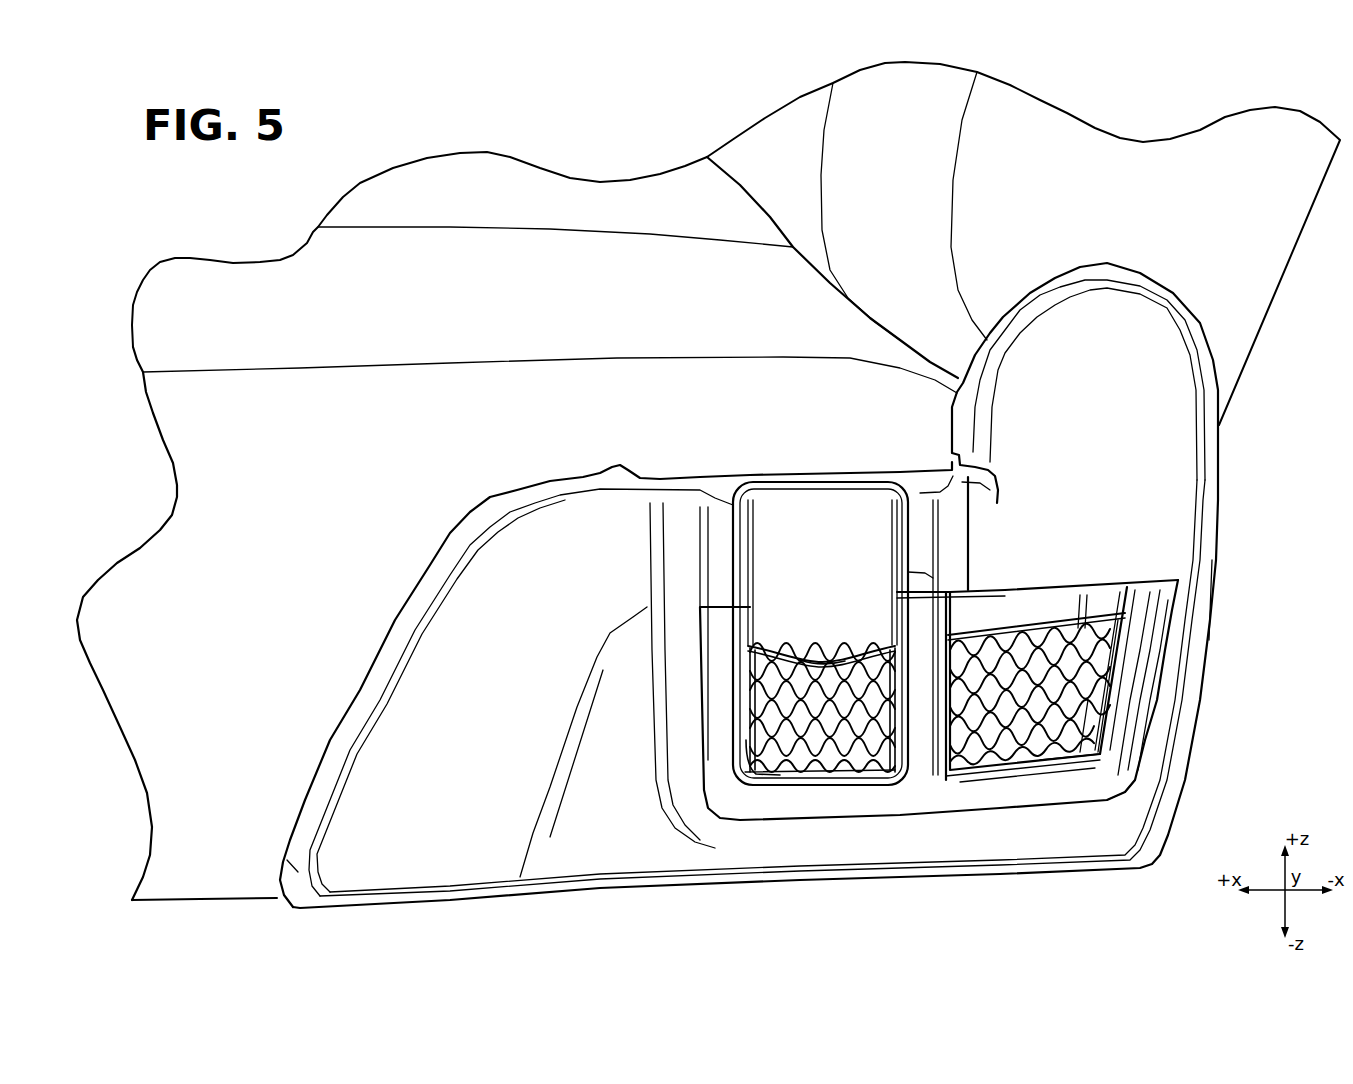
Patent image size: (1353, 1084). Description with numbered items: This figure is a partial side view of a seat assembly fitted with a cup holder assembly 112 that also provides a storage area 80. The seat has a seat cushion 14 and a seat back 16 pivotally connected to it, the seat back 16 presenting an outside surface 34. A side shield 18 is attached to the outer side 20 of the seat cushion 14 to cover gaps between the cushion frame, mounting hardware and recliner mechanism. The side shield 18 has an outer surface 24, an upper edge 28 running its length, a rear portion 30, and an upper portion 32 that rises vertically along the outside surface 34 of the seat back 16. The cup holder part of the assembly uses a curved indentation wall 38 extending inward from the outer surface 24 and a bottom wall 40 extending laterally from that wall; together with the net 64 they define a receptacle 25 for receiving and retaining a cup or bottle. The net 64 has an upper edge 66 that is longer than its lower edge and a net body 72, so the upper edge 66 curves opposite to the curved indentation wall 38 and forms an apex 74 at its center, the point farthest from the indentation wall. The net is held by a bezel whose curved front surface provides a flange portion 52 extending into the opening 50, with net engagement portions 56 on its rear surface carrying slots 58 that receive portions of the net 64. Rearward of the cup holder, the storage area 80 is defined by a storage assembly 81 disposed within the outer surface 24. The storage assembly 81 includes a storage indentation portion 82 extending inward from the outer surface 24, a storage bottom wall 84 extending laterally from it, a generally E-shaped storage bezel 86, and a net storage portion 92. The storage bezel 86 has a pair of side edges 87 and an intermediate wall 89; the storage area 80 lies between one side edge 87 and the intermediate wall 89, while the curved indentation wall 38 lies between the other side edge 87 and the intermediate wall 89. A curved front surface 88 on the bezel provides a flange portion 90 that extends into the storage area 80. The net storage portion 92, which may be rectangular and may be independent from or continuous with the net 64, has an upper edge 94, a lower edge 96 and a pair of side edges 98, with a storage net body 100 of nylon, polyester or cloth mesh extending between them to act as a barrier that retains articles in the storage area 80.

The seat cushion 14 is at (160, 345).
The seat back 16 is at (1280, 128).
The side shield 18 is at (443, 878).
The outer side 20 is at (217, 631).
The outer surface 24 is at (460, 810).
The receptacle 25 is at (836, 550).
The upper edge 28 is at (600, 496).
The rear portion 30 is at (1143, 804).
The upper portion 32 is at (1160, 362).
The outside surface 34 is at (1190, 223).
The curved indentation wall 38 is at (837, 498).
The bottom wall 40 is at (800, 768).
The opening 50 is at (893, 570).
The flange portion 52 is at (752, 648).
The net engagement portions 56 is at (740, 665).
The slots 58 is at (748, 690).
The net 64 is at (902, 785).
The upper edge 66 is at (766, 650).
The net body 72 is at (752, 746).
The apex 74 is at (826, 664).
The storage area 80 is at (1035, 527).
The storage assembly 81 is at (1222, 622).
The storage indentation portion 82 is at (1100, 595).
The storage bottom wall 84 is at (1068, 748).
The storage bezel 86 is at (1170, 707).
The side edges 87 is at (720, 620).
The front surface 88 is at (1130, 743).
The intermediate wall 89 is at (926, 603).
The flange portion 90 is at (1128, 598).
The net storage portion 92 is at (950, 760).
The upper edge 94 is at (1045, 622).
The lower edge 96 is at (1018, 765).
The side edges 98 is at (958, 750).
The storage net body 100 is at (1088, 705).
The cup holder assembly 112 is at (664, 656).